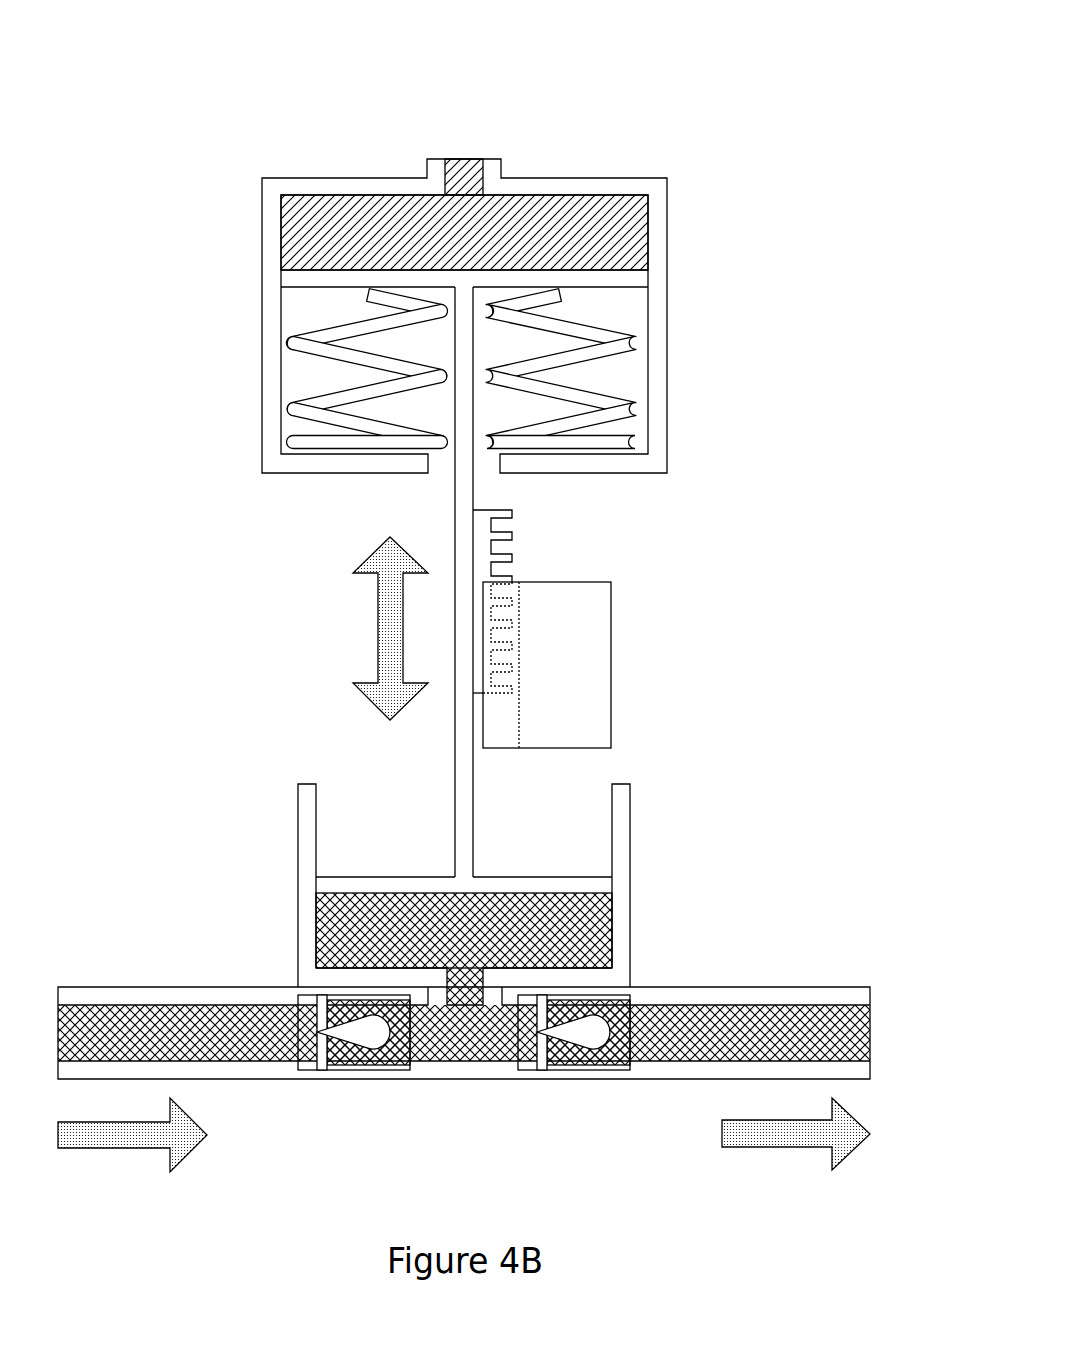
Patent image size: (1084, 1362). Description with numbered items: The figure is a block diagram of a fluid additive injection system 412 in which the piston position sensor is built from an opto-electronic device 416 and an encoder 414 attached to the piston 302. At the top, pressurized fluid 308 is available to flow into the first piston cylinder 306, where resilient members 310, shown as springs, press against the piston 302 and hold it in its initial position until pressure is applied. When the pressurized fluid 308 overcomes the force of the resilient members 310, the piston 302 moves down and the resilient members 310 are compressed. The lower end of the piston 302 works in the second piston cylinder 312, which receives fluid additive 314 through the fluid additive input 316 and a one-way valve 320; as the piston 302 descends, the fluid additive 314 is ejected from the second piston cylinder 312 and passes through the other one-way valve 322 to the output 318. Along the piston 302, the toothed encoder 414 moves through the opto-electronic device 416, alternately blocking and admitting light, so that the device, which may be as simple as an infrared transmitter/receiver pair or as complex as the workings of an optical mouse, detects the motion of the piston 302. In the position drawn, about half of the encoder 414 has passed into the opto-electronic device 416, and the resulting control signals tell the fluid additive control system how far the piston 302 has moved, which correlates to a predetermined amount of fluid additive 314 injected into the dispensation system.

The fluid additive injection system 412 is at (658, 86).
The first piston cylinder 306 is at (658, 178).
The pressurized fluid 308 is at (465, 159).
The resilient members 310 is at (300, 402).
The piston 302 is at (481, 875).
The encoder 414 is at (511, 568).
The opto-electronic device 416 is at (611, 582).
The second piston cylinder 312 is at (630, 783).
The fluid additive 314 is at (590, 931).
The fluid additive input 316 is at (266, 1029).
The output 318 is at (699, 1029).
The one-way valve 320 is at (353, 1070).
The one-way valve 322 is at (575, 1070).